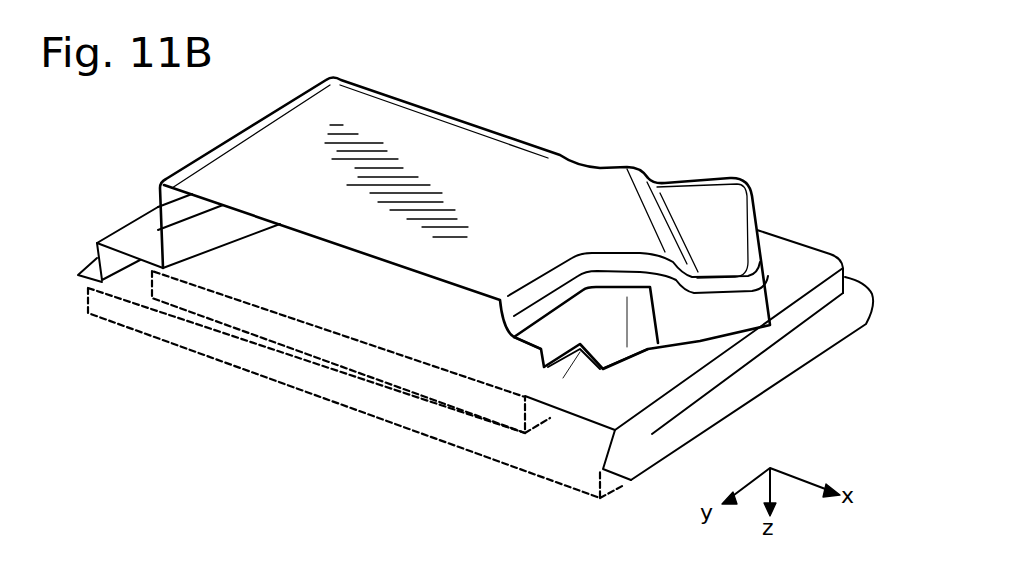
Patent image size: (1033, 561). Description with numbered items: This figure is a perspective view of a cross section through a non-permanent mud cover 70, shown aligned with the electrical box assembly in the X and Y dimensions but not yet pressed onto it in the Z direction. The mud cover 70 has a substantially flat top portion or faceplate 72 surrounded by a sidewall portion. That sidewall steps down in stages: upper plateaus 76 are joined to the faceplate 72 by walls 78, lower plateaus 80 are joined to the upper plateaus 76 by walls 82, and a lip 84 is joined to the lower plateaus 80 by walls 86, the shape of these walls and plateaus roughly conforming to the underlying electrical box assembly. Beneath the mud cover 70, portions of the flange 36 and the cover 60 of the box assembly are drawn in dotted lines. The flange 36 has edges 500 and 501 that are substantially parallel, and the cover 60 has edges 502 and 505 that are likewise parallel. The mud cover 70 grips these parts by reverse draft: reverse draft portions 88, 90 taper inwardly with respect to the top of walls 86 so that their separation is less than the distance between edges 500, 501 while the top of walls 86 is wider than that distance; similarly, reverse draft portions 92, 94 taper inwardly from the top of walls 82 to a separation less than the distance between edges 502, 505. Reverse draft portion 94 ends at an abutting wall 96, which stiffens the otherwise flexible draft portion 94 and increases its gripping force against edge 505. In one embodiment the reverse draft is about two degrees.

The flange 36 is at (238, 360).
The cover 60 is at (182, 305).
The mud cover 70 is at (464, 221).
The top portion 72 is at (343, 97).
The upper plateaus 76 is at (524, 330).
The walls 78 is at (536, 310).
The lower plateaus 80 is at (454, 343).
The walls 82 is at (614, 328).
The lip 84 is at (748, 387).
The walls 86 is at (122, 252).
The reverse draft portion 88 is at (97, 258).
The reverse draft portion 90 is at (635, 435).
The reverse draft portion 92 is at (190, 232).
The reverse draft portion 94 is at (554, 373).
The abutting wall 96 is at (585, 367).
The edge 500 is at (80, 302).
The edge 501 is at (605, 487).
The edge 502 is at (143, 287).
The edge 505 is at (545, 432).